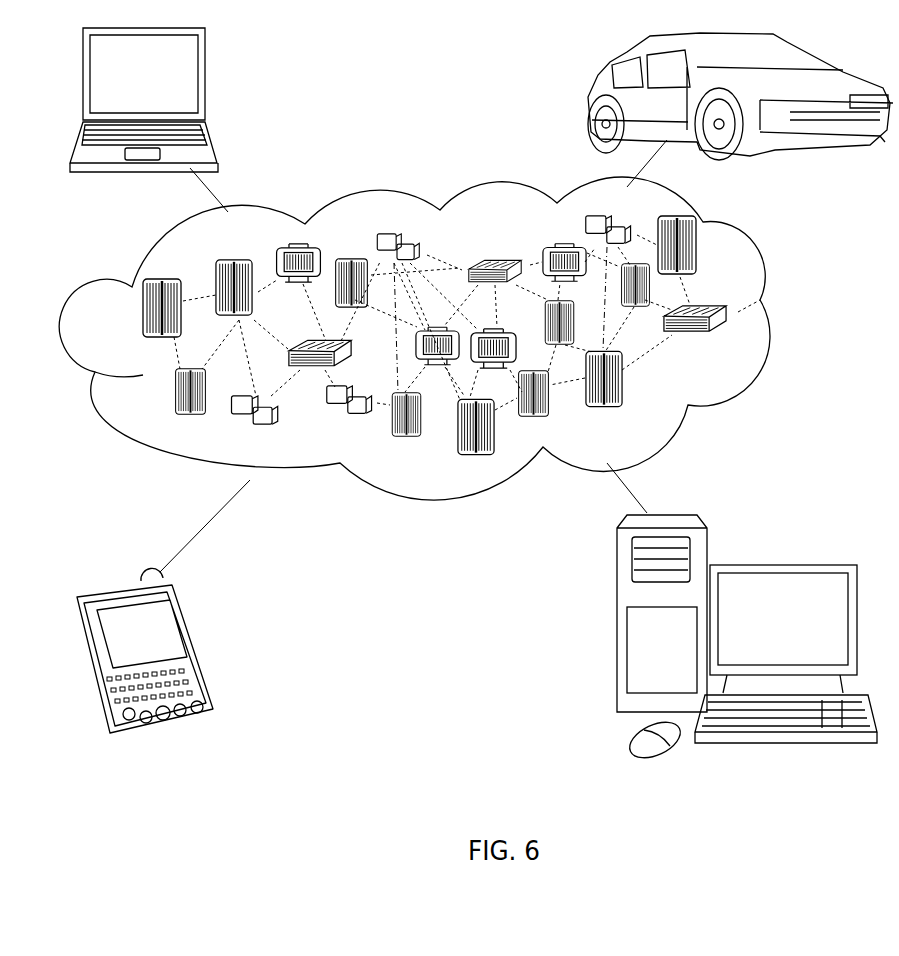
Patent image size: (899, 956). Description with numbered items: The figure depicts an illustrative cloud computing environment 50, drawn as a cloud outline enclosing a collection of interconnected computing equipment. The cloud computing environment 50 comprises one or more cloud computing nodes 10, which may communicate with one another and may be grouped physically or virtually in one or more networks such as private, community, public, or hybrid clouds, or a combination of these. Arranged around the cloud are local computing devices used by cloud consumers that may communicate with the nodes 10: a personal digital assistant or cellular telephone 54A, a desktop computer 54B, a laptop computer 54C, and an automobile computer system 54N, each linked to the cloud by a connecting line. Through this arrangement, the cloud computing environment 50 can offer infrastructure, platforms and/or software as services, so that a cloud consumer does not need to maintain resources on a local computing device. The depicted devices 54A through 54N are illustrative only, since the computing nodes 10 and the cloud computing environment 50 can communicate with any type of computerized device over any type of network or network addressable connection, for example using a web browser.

The cloud computing node 10 is at (733, 343).
The cloud computing environment 50 is at (782, 317).
The personal digital assistant (PDA) or cellular telephone 54A is at (200, 644).
The desktop computer 54B is at (782, 563).
The laptop computer 54C is at (207, 82).
The automobile computer system 54N is at (590, 98).